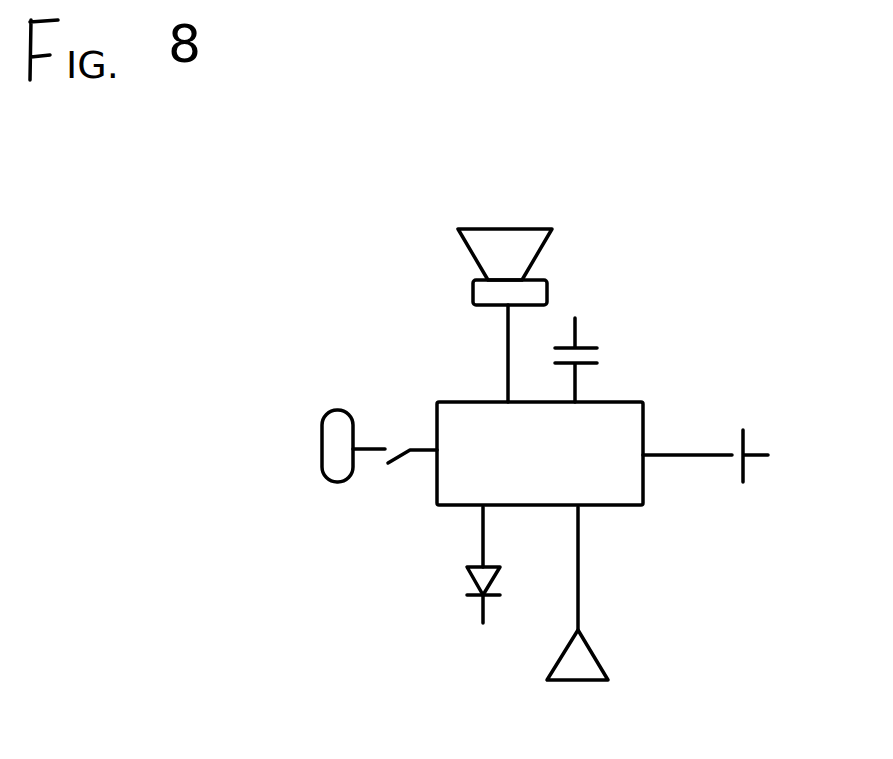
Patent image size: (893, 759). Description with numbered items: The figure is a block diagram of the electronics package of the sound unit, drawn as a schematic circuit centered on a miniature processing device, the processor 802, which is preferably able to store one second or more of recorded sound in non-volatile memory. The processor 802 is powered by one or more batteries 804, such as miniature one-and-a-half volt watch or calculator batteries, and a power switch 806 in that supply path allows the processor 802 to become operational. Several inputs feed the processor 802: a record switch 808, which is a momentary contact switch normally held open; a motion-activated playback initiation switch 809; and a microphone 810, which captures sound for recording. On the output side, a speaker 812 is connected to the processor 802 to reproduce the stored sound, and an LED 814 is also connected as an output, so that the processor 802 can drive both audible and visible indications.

The processor 802 is at (633, 423).
The batteries 804 is at (340, 410).
The power switch 806 is at (380, 473).
The record switch 808 is at (748, 480).
The motion-activated playback initiation switch 809 is at (580, 328).
The microphone 810 is at (593, 653).
The speaker 812 is at (543, 243).
The LED 814 is at (468, 577).